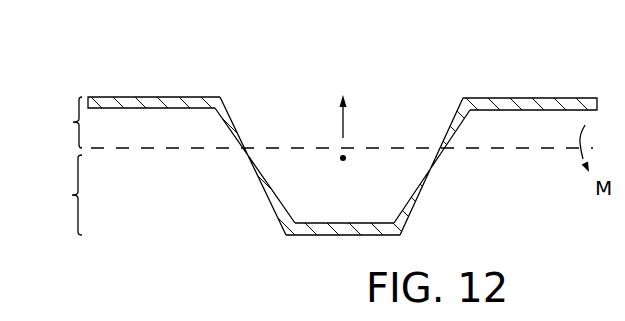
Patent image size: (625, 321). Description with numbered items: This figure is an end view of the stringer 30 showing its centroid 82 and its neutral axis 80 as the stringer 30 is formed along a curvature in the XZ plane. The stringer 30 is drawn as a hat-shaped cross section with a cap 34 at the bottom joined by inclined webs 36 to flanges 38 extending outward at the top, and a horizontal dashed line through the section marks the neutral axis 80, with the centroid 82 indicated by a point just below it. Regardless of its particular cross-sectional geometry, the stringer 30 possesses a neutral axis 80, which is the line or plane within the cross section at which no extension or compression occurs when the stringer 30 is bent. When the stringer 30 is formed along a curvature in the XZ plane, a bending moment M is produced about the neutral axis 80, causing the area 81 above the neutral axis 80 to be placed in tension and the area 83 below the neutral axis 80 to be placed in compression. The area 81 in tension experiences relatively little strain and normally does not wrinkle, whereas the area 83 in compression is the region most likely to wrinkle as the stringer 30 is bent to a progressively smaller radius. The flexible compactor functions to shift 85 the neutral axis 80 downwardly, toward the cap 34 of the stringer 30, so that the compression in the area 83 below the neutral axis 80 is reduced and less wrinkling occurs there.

The stringer 30 is at (517, 75).
The cap 34 is at (325, 235).
The side walls 36 is at (252, 197).
The top wall 38 is at (147, 103).
The neutral axis 80 is at (537, 150).
The area above the neutral axis 81 is at (61, 122).
The centroid 82 is at (342, 164).
The area below the neutral axis 83 is at (60, 195).
The shift 85 is at (344, 118).